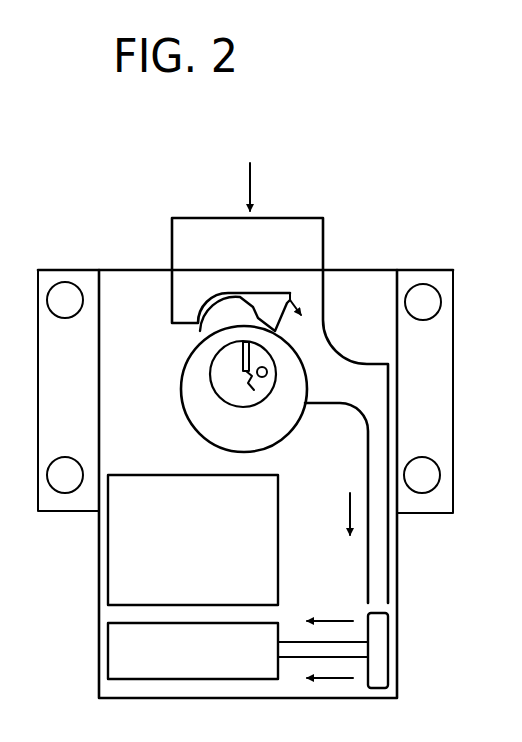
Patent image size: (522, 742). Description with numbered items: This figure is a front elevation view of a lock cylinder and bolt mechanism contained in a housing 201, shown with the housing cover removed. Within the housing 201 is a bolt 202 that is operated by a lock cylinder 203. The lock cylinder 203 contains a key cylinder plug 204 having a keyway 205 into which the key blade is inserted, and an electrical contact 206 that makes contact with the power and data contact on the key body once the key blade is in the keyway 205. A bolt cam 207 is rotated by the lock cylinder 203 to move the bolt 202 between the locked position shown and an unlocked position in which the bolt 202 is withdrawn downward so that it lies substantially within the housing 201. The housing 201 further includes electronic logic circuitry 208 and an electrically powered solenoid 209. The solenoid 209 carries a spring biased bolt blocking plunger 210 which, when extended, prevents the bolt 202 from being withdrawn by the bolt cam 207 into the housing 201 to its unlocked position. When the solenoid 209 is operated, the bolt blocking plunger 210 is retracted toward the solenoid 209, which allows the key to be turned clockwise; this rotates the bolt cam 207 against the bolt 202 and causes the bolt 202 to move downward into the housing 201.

The housing 201 is at (407, 270).
The bolt 202 is at (335, 360).
The lock cylinder 203 is at (197, 408).
The key cylinder plug 204 is at (228, 397).
The keyway 205 is at (254, 390).
The electrical contact 206 is at (267, 372).
The bolt cam 207 is at (206, 336).
The electronic logic circuitry 208 is at (118, 568).
The solenoid 209 is at (115, 652).
The bolt blocking plunger 210 is at (382, 665).